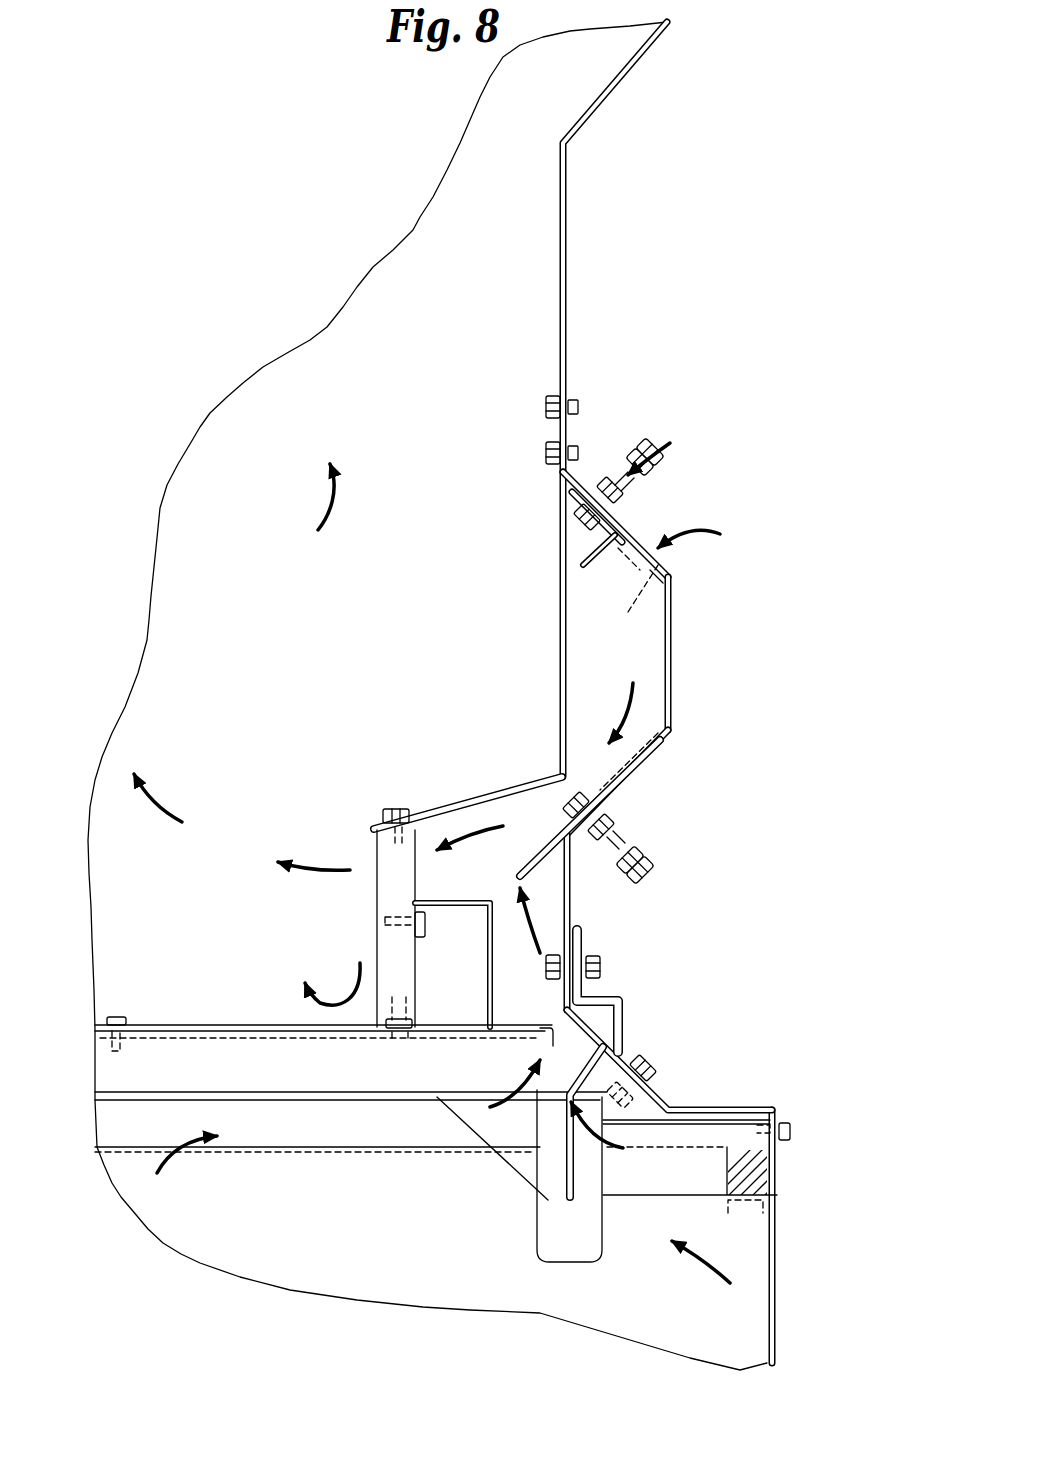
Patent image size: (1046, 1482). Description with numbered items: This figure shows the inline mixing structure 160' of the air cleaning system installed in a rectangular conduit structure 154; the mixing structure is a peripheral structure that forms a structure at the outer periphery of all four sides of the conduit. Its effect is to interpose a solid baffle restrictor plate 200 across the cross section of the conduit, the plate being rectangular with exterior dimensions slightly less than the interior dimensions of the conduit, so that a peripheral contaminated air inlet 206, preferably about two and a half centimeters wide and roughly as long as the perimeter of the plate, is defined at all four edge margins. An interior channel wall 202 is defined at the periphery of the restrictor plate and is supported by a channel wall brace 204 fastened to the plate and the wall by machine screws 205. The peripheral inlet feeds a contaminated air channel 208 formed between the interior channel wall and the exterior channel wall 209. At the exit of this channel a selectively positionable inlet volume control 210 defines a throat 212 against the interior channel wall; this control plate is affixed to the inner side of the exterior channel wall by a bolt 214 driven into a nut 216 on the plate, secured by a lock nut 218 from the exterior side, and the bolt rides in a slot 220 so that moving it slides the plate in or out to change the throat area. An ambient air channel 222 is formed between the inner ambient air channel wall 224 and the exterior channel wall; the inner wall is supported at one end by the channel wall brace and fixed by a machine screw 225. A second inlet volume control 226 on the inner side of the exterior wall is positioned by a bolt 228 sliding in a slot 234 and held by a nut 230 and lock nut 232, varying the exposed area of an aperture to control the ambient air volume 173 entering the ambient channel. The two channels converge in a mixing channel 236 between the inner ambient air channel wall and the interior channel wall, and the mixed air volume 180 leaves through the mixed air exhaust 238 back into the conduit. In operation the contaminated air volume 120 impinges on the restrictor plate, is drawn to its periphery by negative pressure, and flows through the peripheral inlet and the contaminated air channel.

The contaminated air volume 120 is at (570, 920).
The conduit structure 154 is at (592, 110).
The inline mixing structure 160' is at (784, 364).
The ambient air volume 173 is at (655, 440).
The mixed air volume 180 is at (333, 493).
The restrictor plate 200 is at (178, 1025).
The interior channel wall 202 is at (628, 1000).
The channel wall brace 204 is at (384, 997).
The machine screws 205 is at (425, 927).
The peripheral contaminated air inlet 206 is at (560, 1038).
The contaminated air channel 208 is at (548, 988).
The exterior channel wall 209 is at (575, 888).
The inlet volume control 210 is at (622, 784).
The throat 212 is at (422, 818).
The bolt 214 is at (656, 872).
The nut 216 is at (580, 787).
The lock nut 218 is at (620, 820).
The slot 220 is at (640, 770).
The ambient air channel 222 is at (638, 648).
The inner ambient air channel wall 224 is at (558, 612).
The machine screw 225 is at (397, 806).
The inlet volume control 226 is at (670, 578).
The bolt 228 is at (667, 475).
The nut 230 is at (562, 500).
The lock nut 232 is at (580, 478).
The slot 234 is at (623, 530).
The mixing channel 236 is at (377, 878).
The mixed air exhaust 238 is at (377, 900).